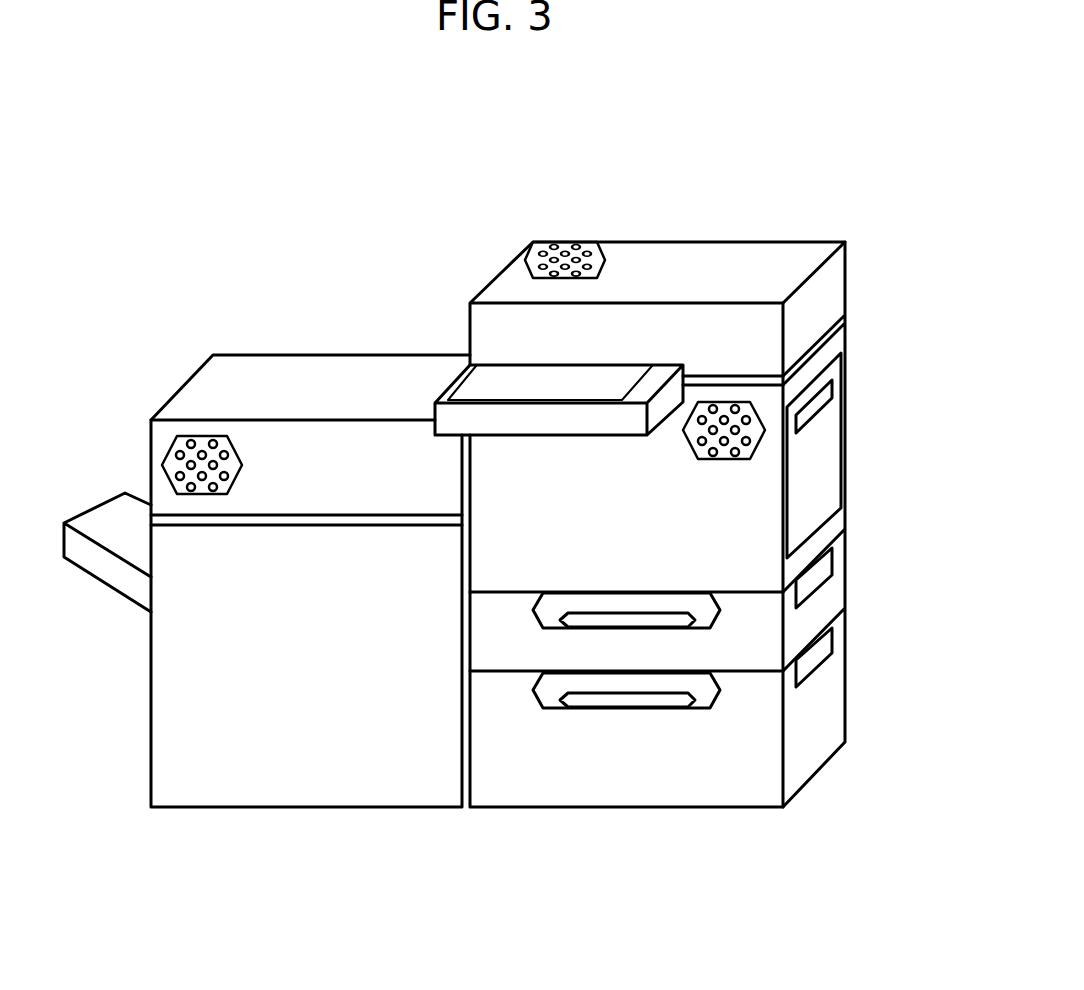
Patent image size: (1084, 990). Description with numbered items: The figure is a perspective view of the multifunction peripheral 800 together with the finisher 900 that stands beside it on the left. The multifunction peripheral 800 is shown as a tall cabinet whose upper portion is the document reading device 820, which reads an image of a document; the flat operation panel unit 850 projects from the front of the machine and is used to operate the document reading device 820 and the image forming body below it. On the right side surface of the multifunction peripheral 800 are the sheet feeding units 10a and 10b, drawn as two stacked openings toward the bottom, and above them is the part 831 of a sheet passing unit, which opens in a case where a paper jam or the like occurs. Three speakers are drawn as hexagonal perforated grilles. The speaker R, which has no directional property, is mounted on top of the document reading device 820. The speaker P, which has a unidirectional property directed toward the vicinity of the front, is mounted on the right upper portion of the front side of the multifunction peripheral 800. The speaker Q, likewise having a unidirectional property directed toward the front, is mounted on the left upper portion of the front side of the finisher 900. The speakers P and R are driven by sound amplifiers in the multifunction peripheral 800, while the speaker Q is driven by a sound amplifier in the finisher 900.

The multifunction peripheral 800 is at (669, 463).
The document reading device 820 is at (693, 267).
The operation panel unit 850 is at (498, 387).
The finisher 900 is at (302, 324).
The part of a sheet passing unit 831 is at (815, 480).
The sheet feeding unit 10a is at (815, 602).
The sheet feeding unit 10b is at (815, 683).
The speaker P is at (755, 412).
The speaker Q is at (172, 452).
The speaker R is at (538, 240).